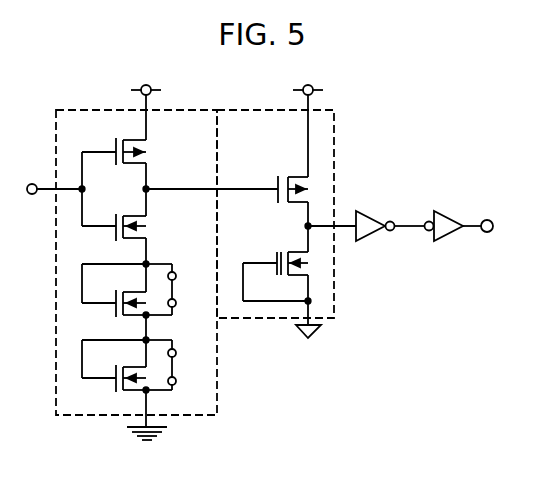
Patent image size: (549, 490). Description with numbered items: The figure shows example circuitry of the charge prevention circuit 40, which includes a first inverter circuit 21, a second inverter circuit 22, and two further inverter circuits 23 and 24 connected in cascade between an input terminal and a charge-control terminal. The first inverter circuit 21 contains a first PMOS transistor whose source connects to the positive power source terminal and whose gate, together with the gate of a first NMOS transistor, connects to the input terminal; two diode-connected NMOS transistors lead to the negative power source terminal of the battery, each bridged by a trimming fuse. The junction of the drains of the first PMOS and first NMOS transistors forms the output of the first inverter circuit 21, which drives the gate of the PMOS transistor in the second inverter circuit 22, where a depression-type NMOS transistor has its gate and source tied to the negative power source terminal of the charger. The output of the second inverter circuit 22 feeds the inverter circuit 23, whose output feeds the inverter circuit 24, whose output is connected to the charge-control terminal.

The first inverter circuit 21 is at (104, 109).
The second inverter circuit 22 is at (262, 108).
The inverter circuit 23 is at (372, 213).
The inverter circuit 24 is at (450, 213).
The charge prevention circuit 40 is at (420, 140).